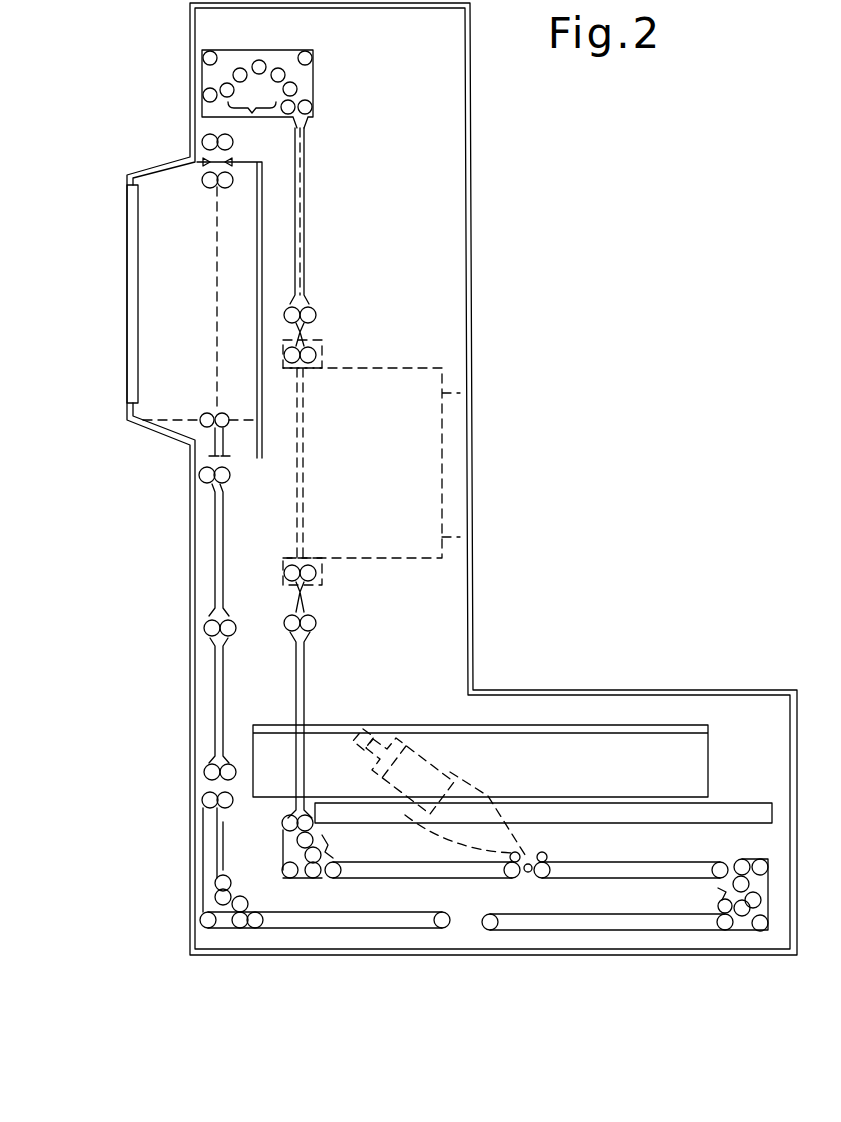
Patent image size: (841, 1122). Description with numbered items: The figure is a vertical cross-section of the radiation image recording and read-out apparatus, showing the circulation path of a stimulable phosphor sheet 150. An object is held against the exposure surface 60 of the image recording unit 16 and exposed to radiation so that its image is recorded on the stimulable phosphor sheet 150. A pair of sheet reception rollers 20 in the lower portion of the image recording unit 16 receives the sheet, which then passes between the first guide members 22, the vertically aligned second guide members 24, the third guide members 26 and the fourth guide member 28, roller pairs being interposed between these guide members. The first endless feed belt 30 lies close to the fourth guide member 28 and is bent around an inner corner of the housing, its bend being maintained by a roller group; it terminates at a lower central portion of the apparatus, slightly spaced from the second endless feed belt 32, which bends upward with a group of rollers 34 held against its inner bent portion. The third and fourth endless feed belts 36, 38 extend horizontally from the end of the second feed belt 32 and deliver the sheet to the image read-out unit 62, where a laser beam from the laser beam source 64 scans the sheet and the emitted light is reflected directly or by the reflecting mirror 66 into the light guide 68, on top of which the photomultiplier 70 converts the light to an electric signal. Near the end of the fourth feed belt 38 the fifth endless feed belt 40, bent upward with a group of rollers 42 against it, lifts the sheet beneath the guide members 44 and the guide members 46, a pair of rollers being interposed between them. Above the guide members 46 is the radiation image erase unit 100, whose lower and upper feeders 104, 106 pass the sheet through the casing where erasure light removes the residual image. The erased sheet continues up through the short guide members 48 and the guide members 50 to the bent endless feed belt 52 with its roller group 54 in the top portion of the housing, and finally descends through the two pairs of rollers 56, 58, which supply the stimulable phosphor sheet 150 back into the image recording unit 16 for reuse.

The image recording unit 16 is at (158, 300).
The sheet reception rollers 20 is at (205, 413).
The first guide members 22 is at (224, 445).
The second guide members 24 is at (215, 547).
The third guide members 26 is at (215, 692).
The fourth guide member 28 is at (222, 840).
The first endless feed belt 30 is at (205, 878).
The second endless feed belt 32 is at (552, 922).
The group of rollers 34 is at (718, 888).
The third endless feed belt 36 is at (650, 872).
The fourth endless feed belt 38 is at (400, 872).
The fifth endless feed belt 40 is at (287, 860).
The group of rollers 42 is at (347, 845).
The guide members 44 is at (298, 682).
The guide members 46 is at (303, 604).
The short guide members 48 is at (300, 333).
The guide members 50 is at (304, 222).
The endless feed belt 52 is at (302, 75).
The roller group 54 is at (266, 100).
The rollers 56 is at (206, 134).
The rollers 58 is at (202, 177).
The exposure surface 60 is at (127, 207).
The image read-out unit 62 is at (602, 724).
The laser beam source 64 is at (558, 777).
The reflecting mirror 66 is at (537, 848).
The light guide 68 is at (492, 796).
The photomultiplier 70 is at (355, 755).
The radiation image erase unit 100 is at (413, 467).
The feeder 104 is at (285, 568).
The feeder 106 is at (322, 345).
The stimulable phosphor sheet 150 is at (300, 152).